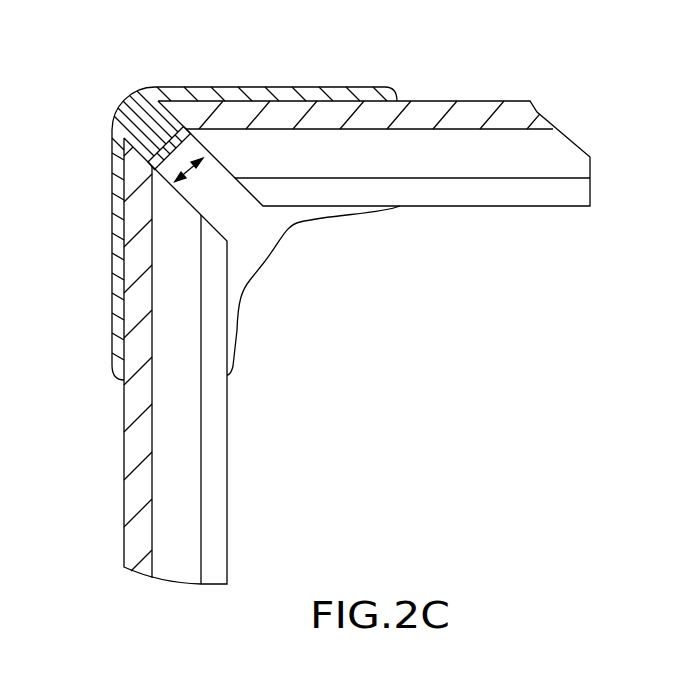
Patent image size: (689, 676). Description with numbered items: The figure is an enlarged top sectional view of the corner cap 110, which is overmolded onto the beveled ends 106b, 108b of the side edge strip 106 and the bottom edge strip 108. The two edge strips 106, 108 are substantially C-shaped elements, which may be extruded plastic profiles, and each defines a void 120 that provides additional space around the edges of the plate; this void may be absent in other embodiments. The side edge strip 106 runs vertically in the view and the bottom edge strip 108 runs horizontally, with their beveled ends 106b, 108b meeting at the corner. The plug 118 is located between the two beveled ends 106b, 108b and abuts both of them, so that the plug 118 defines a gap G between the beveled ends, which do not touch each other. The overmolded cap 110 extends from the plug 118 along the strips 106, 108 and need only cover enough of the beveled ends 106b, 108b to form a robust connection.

The side edge strip 106 is at (227, 463).
The beveled end of side edge strip 106b is at (186, 207).
The bottom edge strip 108 is at (465, 206).
The beveled end of bottom edge strip 108b is at (232, 165).
The corner cap 110 is at (262, 88).
The plug 118 is at (165, 150).
The void 120 is at (575, 157).
The gap G is at (191, 170).